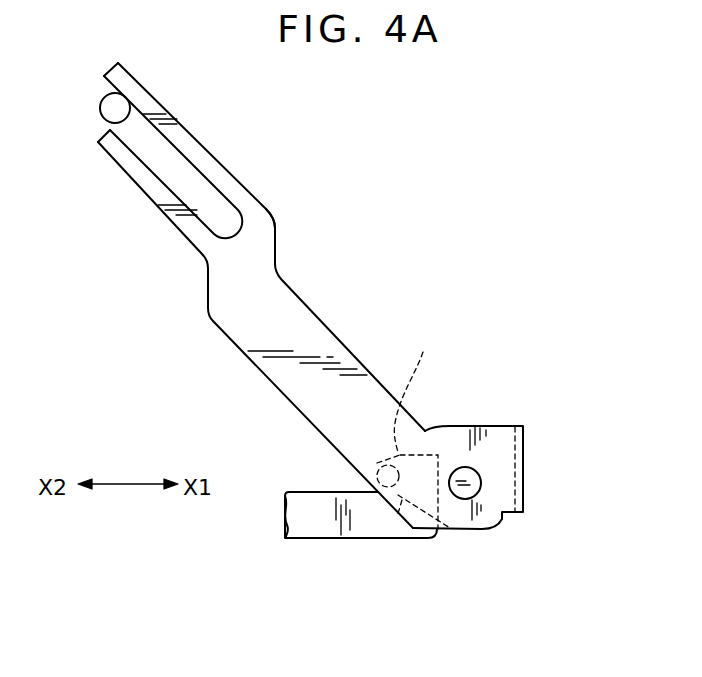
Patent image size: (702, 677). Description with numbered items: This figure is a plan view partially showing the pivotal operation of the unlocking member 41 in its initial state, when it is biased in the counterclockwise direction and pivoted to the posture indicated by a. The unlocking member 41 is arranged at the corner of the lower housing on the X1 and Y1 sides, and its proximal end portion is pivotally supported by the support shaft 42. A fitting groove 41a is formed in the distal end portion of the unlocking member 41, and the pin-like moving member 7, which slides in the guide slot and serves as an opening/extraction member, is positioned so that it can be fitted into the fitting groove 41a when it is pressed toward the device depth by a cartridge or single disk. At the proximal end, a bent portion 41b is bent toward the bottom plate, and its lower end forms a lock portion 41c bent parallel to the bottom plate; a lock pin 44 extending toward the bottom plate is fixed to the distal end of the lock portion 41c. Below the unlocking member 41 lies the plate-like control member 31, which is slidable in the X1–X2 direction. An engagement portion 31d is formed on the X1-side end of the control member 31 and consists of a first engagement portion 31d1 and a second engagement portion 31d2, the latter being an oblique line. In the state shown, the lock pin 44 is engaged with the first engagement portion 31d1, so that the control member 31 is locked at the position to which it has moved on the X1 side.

The moving member 7 is at (104, 112).
The unlocking member 41 is at (305, 327).
The fitting groove 41a is at (158, 158).
The posture a is at (275, 209).
The bent portion 41b is at (525, 477).
The lock portion 41c is at (428, 390).
The support shaft 42 is at (480, 485).
The control member 31 is at (320, 530).
The engagement portion 31d is at (410, 483).
The first engagement portion 31d1 is at (397, 517).
The second engagement portion 31d2 is at (418, 455).
The lock pin 44 is at (377, 465).